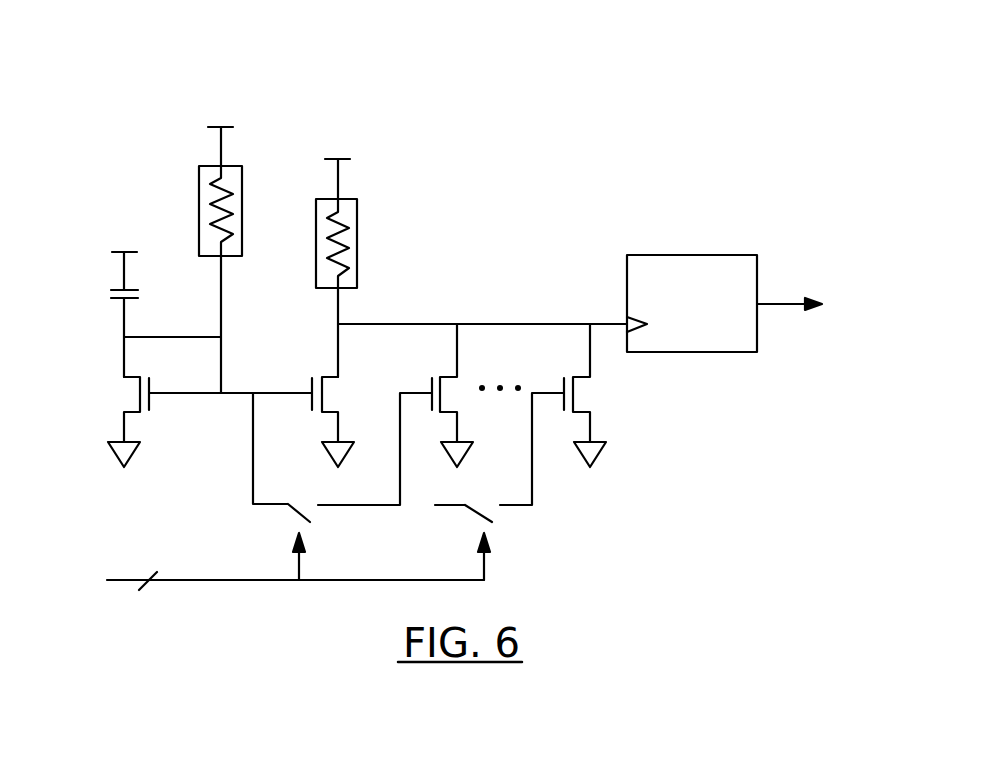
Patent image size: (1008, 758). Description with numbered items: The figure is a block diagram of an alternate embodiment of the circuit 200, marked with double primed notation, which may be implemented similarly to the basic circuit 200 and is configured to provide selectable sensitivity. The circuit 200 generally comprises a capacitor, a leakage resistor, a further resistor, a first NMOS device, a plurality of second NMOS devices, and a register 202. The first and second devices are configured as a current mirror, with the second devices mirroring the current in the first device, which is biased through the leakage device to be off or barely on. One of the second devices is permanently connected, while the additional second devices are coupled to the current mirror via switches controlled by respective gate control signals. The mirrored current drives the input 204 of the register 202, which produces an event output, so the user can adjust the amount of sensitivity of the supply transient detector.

The circuit 200 is at (130, 103).
The register 202 is at (707, 255).
The input 204 is at (627, 324).